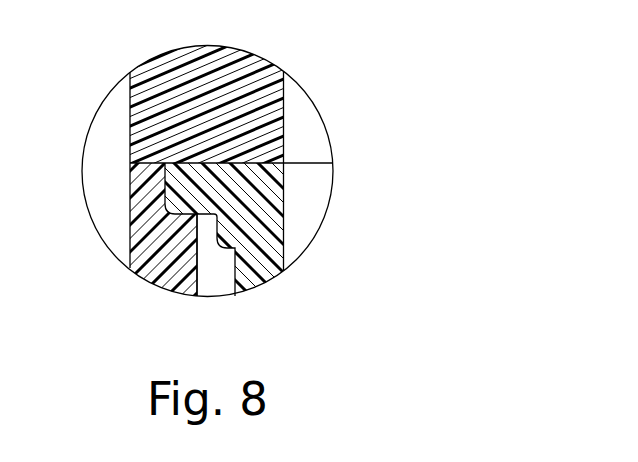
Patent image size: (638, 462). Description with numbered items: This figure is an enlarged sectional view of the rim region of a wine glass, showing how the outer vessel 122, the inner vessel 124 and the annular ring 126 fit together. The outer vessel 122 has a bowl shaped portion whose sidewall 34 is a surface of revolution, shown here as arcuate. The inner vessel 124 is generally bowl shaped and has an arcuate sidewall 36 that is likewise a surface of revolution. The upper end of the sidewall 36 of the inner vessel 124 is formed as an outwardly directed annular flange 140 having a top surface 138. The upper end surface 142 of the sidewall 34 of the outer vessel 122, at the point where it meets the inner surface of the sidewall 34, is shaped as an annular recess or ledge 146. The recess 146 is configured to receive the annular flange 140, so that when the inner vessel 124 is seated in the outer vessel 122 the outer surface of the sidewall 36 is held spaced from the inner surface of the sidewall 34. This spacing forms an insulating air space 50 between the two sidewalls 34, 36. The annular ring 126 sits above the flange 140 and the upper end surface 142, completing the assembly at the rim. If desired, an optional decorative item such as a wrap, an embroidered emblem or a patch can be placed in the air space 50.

The annular ring 126 is at (158, 83).
The annular flange 140 is at (167, 201).
The top surface 138 is at (251, 162).
The upper end surface 142 is at (150, 163).
The sidewall 34 is at (148, 217).
The outer vessel 122 is at (145, 250).
The annular recess 146 is at (153, 280).
The insulating air space 50 is at (210, 258).
The sidewall 36 is at (258, 265).
The inner vessel 124 is at (265, 218).